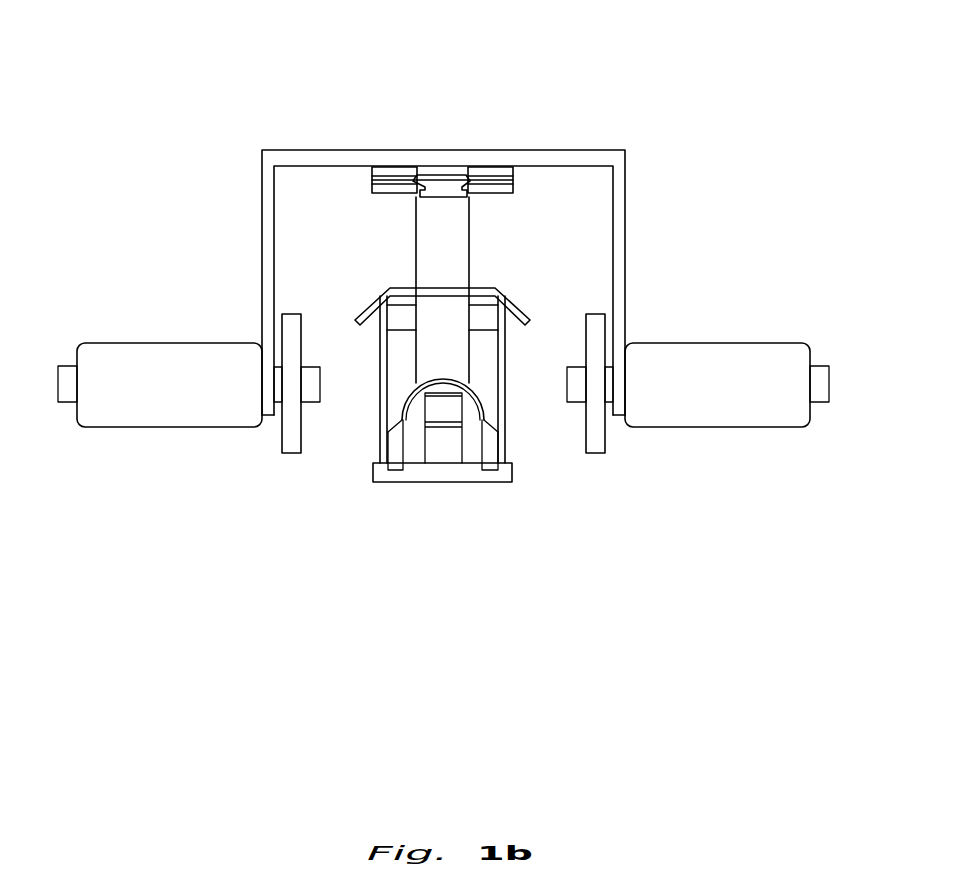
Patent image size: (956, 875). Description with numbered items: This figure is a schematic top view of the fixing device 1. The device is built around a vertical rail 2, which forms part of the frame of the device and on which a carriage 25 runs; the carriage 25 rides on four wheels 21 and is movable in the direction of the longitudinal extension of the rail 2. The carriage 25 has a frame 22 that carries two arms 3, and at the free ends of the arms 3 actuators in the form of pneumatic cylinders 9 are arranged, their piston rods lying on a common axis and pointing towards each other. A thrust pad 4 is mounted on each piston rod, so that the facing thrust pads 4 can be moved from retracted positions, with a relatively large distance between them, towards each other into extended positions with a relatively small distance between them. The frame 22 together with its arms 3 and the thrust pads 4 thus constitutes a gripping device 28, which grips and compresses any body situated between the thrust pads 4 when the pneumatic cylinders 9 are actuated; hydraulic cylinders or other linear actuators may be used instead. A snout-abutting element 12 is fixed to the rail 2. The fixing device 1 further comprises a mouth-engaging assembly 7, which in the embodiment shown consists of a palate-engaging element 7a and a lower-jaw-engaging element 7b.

The fixing device 1 is at (246, 694).
The vertical rail 2 is at (445, 188).
The arms 3 is at (267, 222).
The thrust pad 4 is at (292, 448).
The mouth-engaging assembly 7 is at (459, 560).
The palate-engaging element 7a is at (469, 398).
The lower-jaw-engaging element 7b is at (438, 408).
The pneumatic cylinders 9 is at (157, 402).
The snout-abutting element 12 is at (513, 307).
The wheels 21 is at (372, 185).
The frame 22 is at (408, 162).
The carriage 25 is at (262, 132).
The gripping device 28 is at (650, 214).